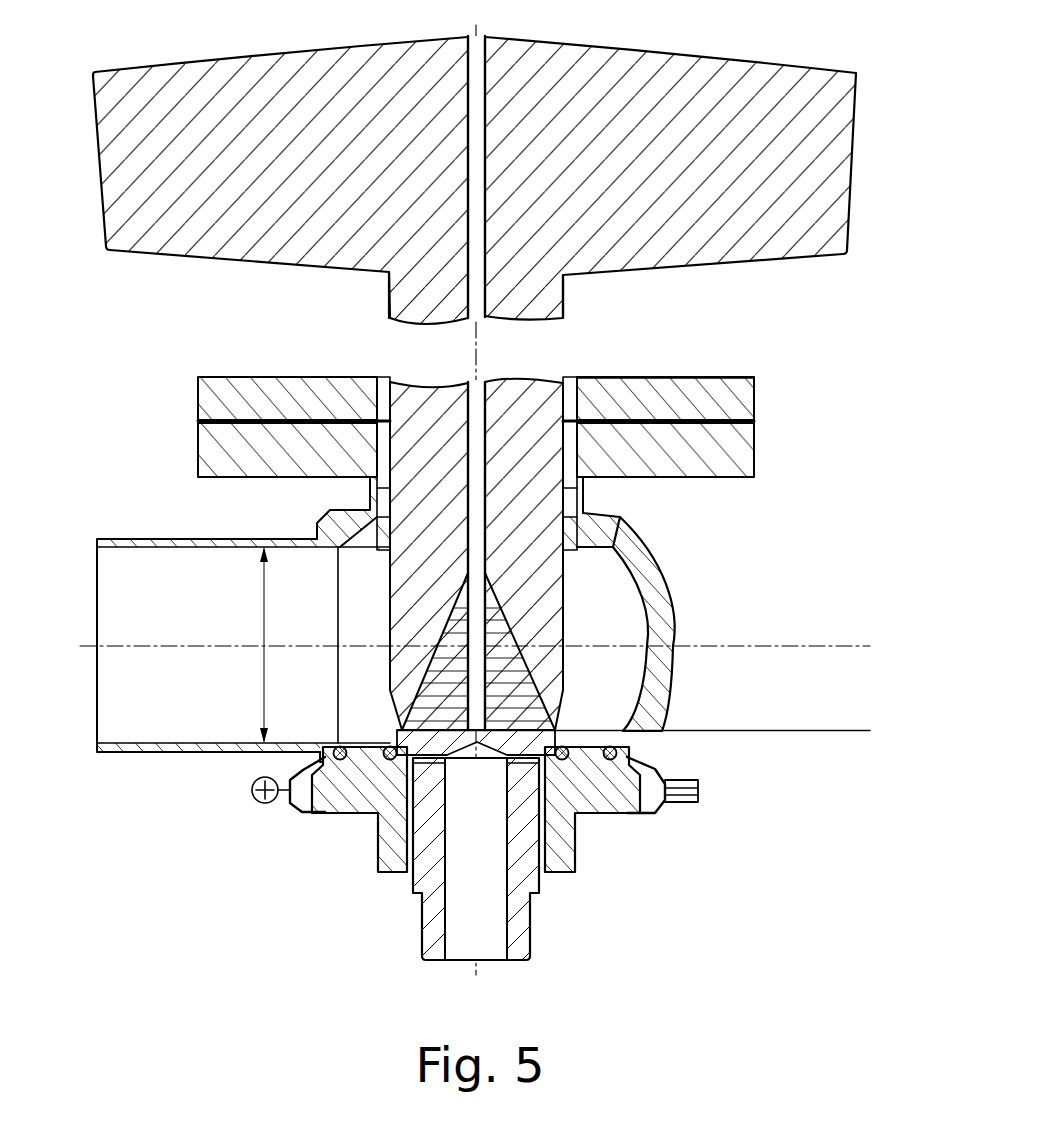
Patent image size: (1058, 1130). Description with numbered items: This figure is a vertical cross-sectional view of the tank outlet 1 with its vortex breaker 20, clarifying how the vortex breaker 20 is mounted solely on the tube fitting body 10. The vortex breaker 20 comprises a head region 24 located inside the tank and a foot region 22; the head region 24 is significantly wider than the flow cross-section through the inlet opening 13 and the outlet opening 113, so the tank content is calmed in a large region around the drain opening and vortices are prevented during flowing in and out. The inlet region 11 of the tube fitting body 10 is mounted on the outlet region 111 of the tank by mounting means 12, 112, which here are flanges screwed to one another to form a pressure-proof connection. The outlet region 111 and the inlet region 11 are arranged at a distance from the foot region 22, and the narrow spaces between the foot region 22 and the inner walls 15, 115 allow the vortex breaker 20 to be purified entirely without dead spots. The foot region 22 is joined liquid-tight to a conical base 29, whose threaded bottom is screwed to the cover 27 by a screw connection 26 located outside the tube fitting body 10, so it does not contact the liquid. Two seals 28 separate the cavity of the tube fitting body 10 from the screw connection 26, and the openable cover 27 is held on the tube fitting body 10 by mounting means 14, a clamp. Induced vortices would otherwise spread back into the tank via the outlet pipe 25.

The tank outlet 1 is at (69, 366).
The tube fitting body 10 is at (650, 577).
The inlet region 11 is at (736, 463).
The mounting means 12 is at (738, 440).
The inlet opening 13 is at (572, 463).
The mounting means 14 is at (300, 815).
The inner wall 15 is at (372, 462).
The vortex breaker 20 is at (403, 290).
The foot region 22 is at (525, 412).
The head region 24 is at (838, 115).
The outlet pipe 25 is at (122, 538).
The screw connection 26 is at (395, 868).
The cover 27 is at (363, 790).
The seal 28 is at (607, 770).
The base 29 is at (508, 660).
The outlet region 111 is at (700, 393).
The mounting means 112 is at (738, 393).
The outlet opening 113 is at (585, 378).
The inner wall 115 is at (375, 392).